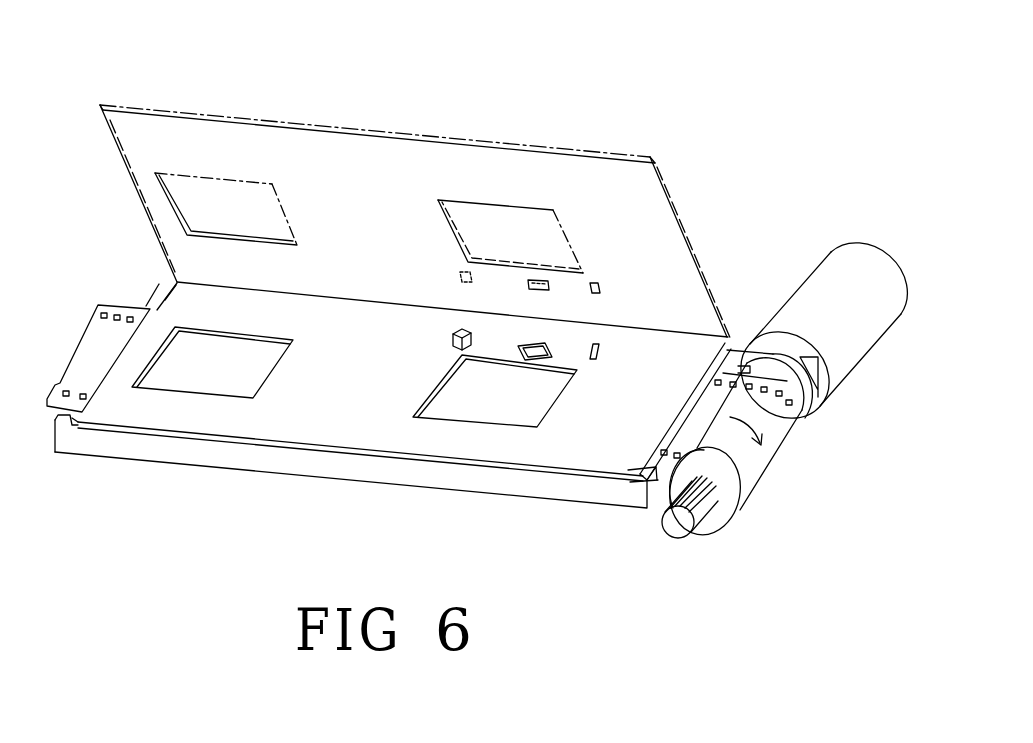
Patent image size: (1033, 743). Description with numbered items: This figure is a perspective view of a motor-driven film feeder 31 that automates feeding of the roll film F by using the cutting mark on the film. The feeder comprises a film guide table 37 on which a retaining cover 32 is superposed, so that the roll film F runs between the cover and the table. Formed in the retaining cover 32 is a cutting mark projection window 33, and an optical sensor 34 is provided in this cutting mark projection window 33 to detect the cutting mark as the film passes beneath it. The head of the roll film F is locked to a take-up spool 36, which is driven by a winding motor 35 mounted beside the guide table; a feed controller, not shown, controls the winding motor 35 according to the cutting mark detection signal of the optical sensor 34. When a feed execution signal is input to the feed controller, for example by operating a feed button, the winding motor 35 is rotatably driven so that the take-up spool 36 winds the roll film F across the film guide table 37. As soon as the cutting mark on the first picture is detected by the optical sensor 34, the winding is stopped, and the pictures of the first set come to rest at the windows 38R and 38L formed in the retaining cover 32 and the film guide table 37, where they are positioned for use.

The motor-driven film feeder 31 is at (315, 114).
The retaining cover 32 is at (514, 141).
The cutting mark projection window 33 is at (474, 343).
The optical sensor 34 is at (453, 333).
The winding motor 35 is at (803, 293).
The take-up spool 36 is at (730, 522).
The film guide table 37 is at (427, 490).
The left window 38L is at (150, 377).
The right window 38R is at (537, 417).
The roll film F is at (110, 303).